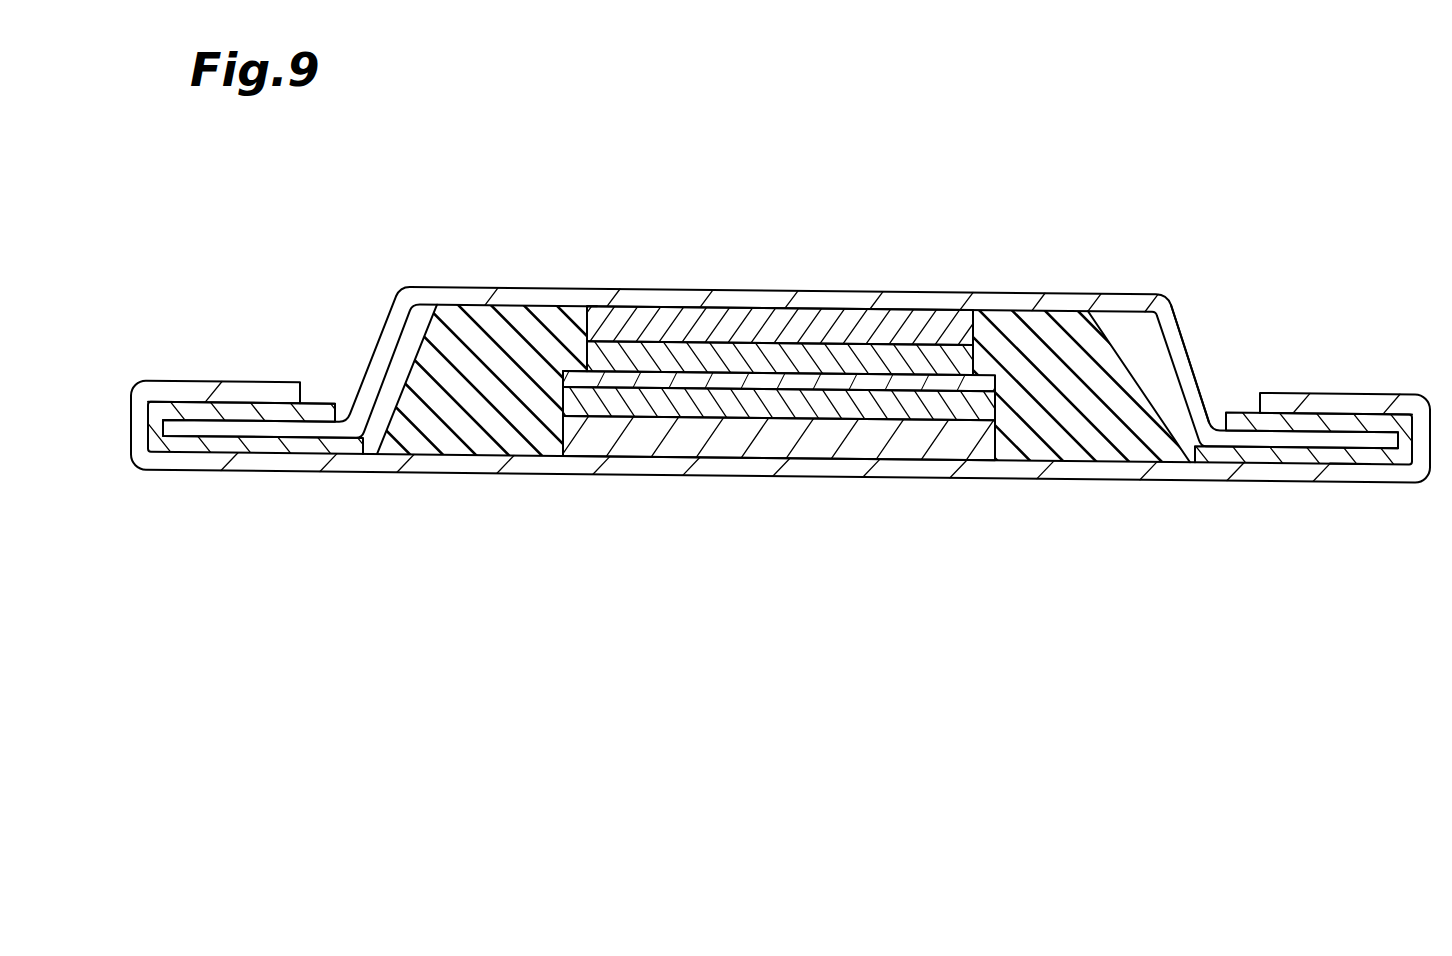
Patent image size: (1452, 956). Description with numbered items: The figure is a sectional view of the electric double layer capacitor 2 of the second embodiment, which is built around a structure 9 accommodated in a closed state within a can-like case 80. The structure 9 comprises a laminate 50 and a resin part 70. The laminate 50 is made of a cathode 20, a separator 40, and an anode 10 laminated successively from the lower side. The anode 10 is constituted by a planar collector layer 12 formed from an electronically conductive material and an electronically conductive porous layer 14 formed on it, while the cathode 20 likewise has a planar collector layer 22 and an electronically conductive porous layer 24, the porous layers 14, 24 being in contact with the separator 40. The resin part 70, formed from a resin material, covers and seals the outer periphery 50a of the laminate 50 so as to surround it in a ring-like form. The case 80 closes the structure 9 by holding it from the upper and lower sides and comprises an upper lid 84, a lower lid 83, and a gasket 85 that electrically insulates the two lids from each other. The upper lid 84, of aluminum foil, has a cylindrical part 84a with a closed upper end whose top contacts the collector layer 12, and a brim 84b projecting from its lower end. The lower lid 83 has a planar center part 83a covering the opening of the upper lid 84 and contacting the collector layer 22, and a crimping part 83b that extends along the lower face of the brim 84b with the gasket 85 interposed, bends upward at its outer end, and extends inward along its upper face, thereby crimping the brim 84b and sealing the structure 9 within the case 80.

The electric double layer capacitor 2 is at (788, 461).
The structure 9 is at (777, 480).
The anode 10 is at (907, 445).
The collector layer 12 is at (973, 315).
The porous layer 14 is at (973, 357).
The cathode 20 is at (897, 528).
The collector layer 22 is at (995, 440).
The porous layer 24 is at (995, 404).
The separator 40 is at (995, 381).
The laminate 50 is at (921, 488).
The outer periphery 50a is at (586, 308).
The resin part 70 is at (414, 372).
The case 80 is at (788, 438).
The lower lid 83 is at (778, 439).
The center part 83a is at (158, 557).
The crimping part 83b is at (127, 460).
The upper lid 84 is at (788, 404).
The cylindrical part 84a is at (1184, 324).
The brim 84b is at (249, 452).
The gasket 85 is at (323, 402).